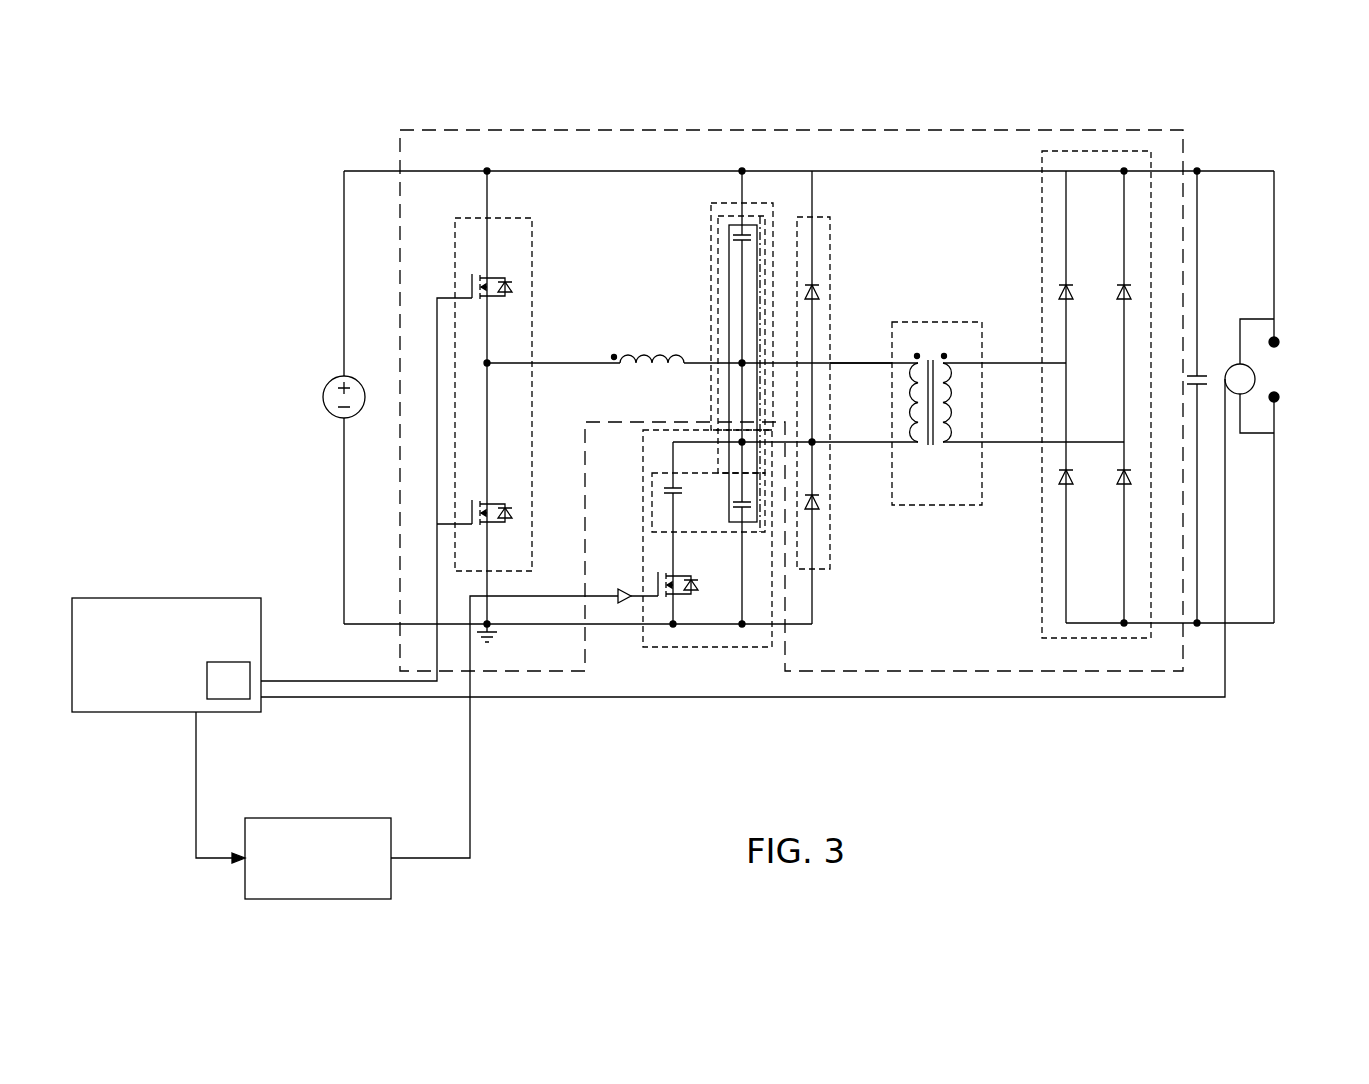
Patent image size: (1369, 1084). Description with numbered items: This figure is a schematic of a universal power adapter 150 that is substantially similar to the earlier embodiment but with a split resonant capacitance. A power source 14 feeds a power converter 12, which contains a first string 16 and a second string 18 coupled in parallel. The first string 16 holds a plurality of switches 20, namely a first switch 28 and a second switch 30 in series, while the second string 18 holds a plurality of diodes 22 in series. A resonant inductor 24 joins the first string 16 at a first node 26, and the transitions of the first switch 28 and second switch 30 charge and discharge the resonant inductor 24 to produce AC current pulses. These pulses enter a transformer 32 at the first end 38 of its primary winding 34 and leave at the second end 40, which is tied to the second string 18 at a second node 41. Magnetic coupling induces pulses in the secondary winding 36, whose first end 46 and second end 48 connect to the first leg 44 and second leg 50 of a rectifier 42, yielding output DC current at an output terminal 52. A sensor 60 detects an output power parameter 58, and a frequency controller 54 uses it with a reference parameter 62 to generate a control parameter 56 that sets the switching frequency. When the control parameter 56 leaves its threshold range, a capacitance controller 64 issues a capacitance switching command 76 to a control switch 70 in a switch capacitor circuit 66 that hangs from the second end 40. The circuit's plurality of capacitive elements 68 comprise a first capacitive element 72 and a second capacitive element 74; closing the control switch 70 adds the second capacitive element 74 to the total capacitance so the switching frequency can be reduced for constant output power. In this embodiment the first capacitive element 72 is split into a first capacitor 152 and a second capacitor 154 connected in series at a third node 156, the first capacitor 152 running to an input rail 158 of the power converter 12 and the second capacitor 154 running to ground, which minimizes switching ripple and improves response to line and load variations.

The universal power adapter 150 is at (190, 123).
The power converter 12 is at (400, 140).
The power source 14 is at (323, 397).
The first string 16 is at (487, 205).
The second string 18 is at (812, 186).
The plurality of switches 20 is at (532, 236).
The plurality of diodes 22 is at (830, 228).
The resonant inductor 24 is at (628, 357).
The first node 26 is at (490, 361).
The first switch 28 is at (510, 288).
The second switch 30 is at (512, 514).
The transformer 32 is at (942, 382).
The primary winding 34 is at (918, 445).
The secondary winding 36 is at (946, 445).
The first end 38 is at (845, 361).
The second end 40 is at (872, 448).
The second node 41 is at (815, 441).
The rectifier 42 is at (1126, 394).
The first leg 44 is at (1066, 199).
The first end 46 is at (1003, 361).
The second end 48 is at (1020, 446).
The second leg 50 is at (1124, 256).
The output terminal 52 is at (1278, 370).
The frequency controller 54 is at (140, 598).
The control parameter 56 is at (196, 786).
The output power parameter 58 is at (705, 698).
The sensor 60 is at (1229, 368).
The reference parameter 62 is at (238, 662).
The capacitance controller 64 is at (320, 818).
The switch capacitor circuit 66 is at (667, 430).
The plurality of capacitive elements 68 is at (711, 226).
The control switch 70 is at (694, 585).
The first capacitive element 72 is at (732, 213).
The second capacitive element 74 is at (664, 491).
The capacitance switching command 76 is at (624, 590).
The first capacitor 152 is at (735, 240).
The second capacitor 154 is at (734, 505).
The third node 156 is at (740, 360).
The input rail 158 is at (742, 171).